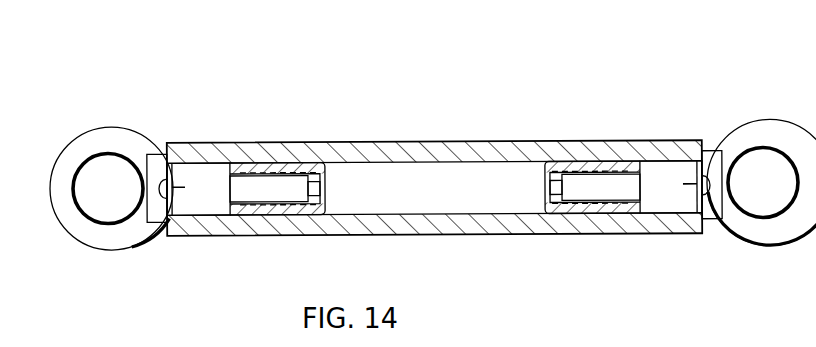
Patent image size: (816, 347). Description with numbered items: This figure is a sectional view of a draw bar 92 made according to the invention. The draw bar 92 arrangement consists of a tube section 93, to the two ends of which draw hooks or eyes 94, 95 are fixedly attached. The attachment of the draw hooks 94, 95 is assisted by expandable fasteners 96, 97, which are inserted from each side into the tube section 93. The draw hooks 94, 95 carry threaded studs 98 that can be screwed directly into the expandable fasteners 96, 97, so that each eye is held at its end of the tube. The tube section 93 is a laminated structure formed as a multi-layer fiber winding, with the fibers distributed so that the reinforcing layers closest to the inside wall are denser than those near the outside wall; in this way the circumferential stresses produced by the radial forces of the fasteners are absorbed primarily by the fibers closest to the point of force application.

The draw bar 92 is at (446, 142).
The tube section 93 is at (430, 226).
The draw hook 94 is at (127, 230).
The draw hook 95 is at (733, 226).
The expandable fastener 96 is at (283, 210).
The expandable fastener 97 is at (614, 208).
The threaded stud 98 is at (258, 187).